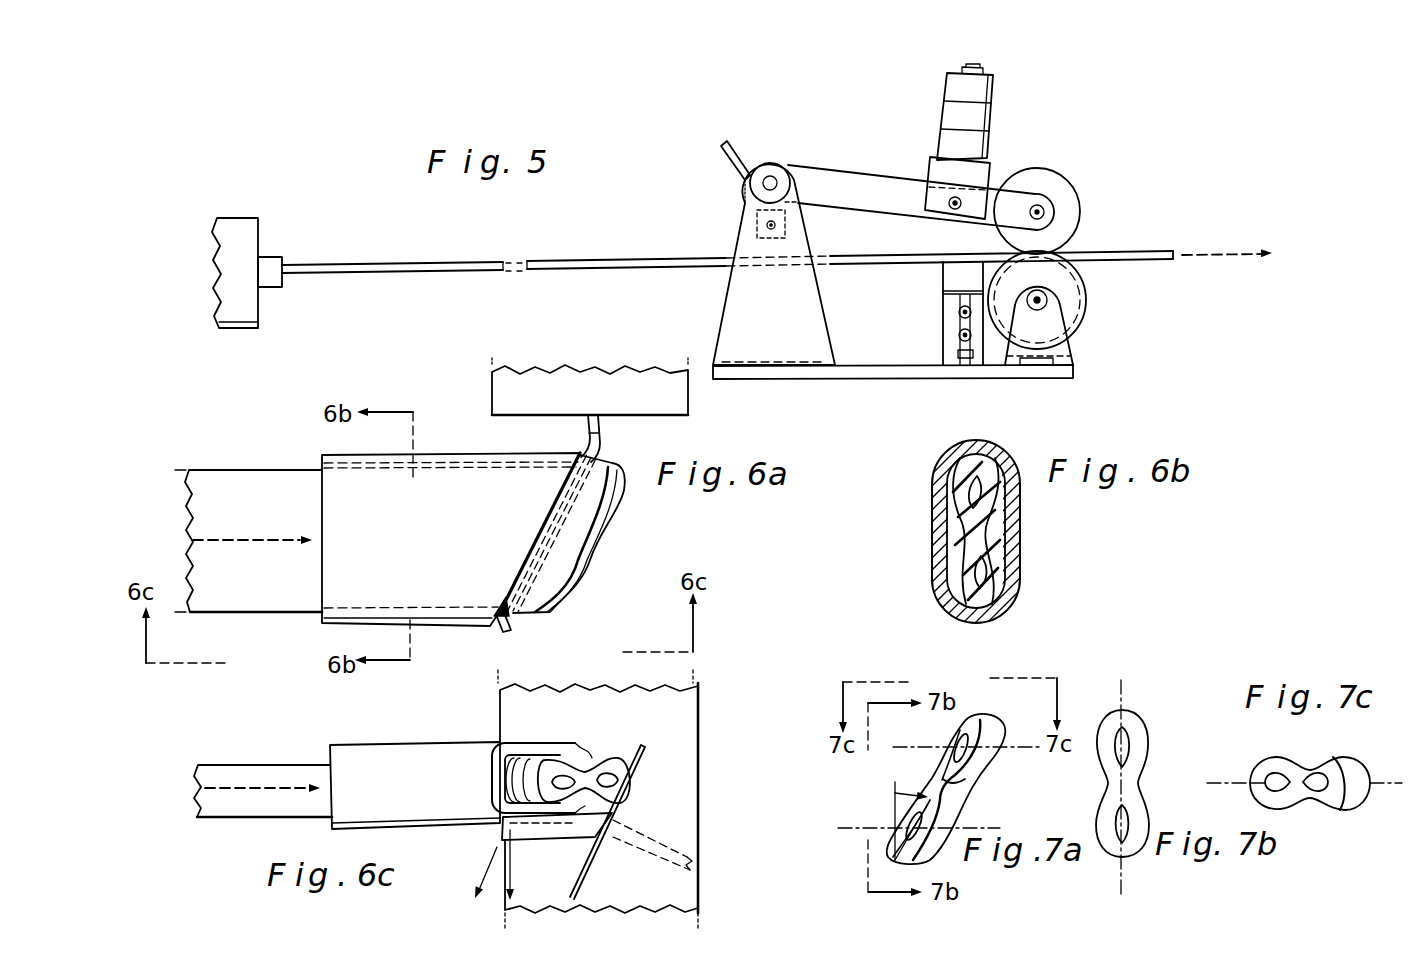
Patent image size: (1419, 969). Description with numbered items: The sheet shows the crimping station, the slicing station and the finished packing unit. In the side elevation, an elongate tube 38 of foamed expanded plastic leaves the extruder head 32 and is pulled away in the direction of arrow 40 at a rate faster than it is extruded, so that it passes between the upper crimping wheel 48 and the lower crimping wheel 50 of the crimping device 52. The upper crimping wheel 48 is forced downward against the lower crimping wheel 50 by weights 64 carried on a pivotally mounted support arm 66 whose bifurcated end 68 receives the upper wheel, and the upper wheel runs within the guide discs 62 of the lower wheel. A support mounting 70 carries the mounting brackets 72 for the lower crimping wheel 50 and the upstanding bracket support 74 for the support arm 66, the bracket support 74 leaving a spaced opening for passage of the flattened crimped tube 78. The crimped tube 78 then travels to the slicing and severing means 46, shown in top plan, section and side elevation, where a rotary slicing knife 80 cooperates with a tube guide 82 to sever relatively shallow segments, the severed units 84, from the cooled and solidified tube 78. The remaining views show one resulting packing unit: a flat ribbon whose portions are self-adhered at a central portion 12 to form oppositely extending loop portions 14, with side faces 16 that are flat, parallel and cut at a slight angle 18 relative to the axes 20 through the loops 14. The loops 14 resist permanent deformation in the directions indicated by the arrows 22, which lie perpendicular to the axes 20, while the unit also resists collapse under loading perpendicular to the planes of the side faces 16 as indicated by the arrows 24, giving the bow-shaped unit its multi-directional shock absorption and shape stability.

In FIG. 6A, the central portion 12 is at (225, 550).
In FIG. 6B, the central portion 12 is at (980, 531).
In FIG. 7A, the central portion 12 is at (955, 780).
In FIG. 7B, the central portion 12 is at (1129, 781).
In FIG. 7C, the central portion 12 is at (1299, 794).
In FIG. 6A, the loop portions 14 is at (237, 473).
In FIG. 6B, the loop portions 14 is at (976, 460).
In FIG. 6C, the loop portions 14 is at (247, 802).
In FIG. 7A, the loop portions 14 is at (971, 720).
In FIG. 7B, the loop portions 14 is at (1126, 720).
In FIG. 7C, the loop portions 14 is at (1260, 792).
In FIG. 7A, the side faces 16 is at (950, 755).
In FIG. 7B, the side faces 16 is at (1141, 745).
In FIG. 7C, the side faces 16 is at (1273, 803).
In FIG. 7A, the angle 18 is at (919, 772).
In FIG. 7A, the axes through the loops 20 is at (1021, 747).
In FIG. 7C, the axes through the loops 20 is at (1384, 781).
In FIG. 7B, the arrows 22 is at (1098, 712).
In FIG. 7A, the arrows 24 is at (947, 735).
In FIG. 5, the extruder head 32 is at (233, 228).
In FIG. 5, the elongate tube 38 is at (533, 258).
In FIG. 5, the arrow 40 is at (1224, 252).
In FIG. 6A, the arrow 40 is at (263, 537).
In FIG. 6C, the arrow 40 is at (281, 785).
In FIG. 6A, the slicing and severing means 46 is at (616, 362).
In FIG. 6C, the slicing and severing means 46 is at (694, 729).
In FIG. 5, the upper crimping wheel 48 is at (1063, 193).
In FIG. 6A, the upper crimping wheel 48 is at (646, 440).
In FIG. 5, the lower crimping wheel 50 is at (1077, 297).
In FIG. 5, the crimping device 52 is at (860, 146).
In FIG. 5, the guide discs 62 is at (1083, 280).
In FIG. 5, the weights 64 is at (977, 122).
In FIG. 5, the support arm 66 is at (858, 188).
In FIG. 5, the bifurcated end 68 is at (1022, 202).
In FIG. 5, the support mounting 70 is at (860, 373).
In FIG. 5, the mounting brackets 72 is at (1067, 348).
In FIG. 5, the bracket support 74 is at (778, 342).
In FIG. 5, the flattened crimped tube 78 is at (1142, 246).
In FIG. 6A, the flattened crimped tube 78 is at (270, 622).
In FIG. 6B, the flattened crimped tube 78 is at (945, 499).
In FIG. 6C, the flattened crimped tube 78 is at (258, 755).
In FIG. 6A, the rotary slicing knife 80 is at (594, 430).
In FIG. 6C, the rotary slicing knife 80 is at (552, 831).
In FIG. 6A, the tube guide 82 is at (419, 551).
In FIG. 6B, the tube guide 82 is at (945, 538).
In FIG. 6C, the tube guide 82 is at (415, 797).
In FIG. 6A, the severed units 84 is at (585, 568).
In FIG. 6C, the severed units 84 is at (609, 747).